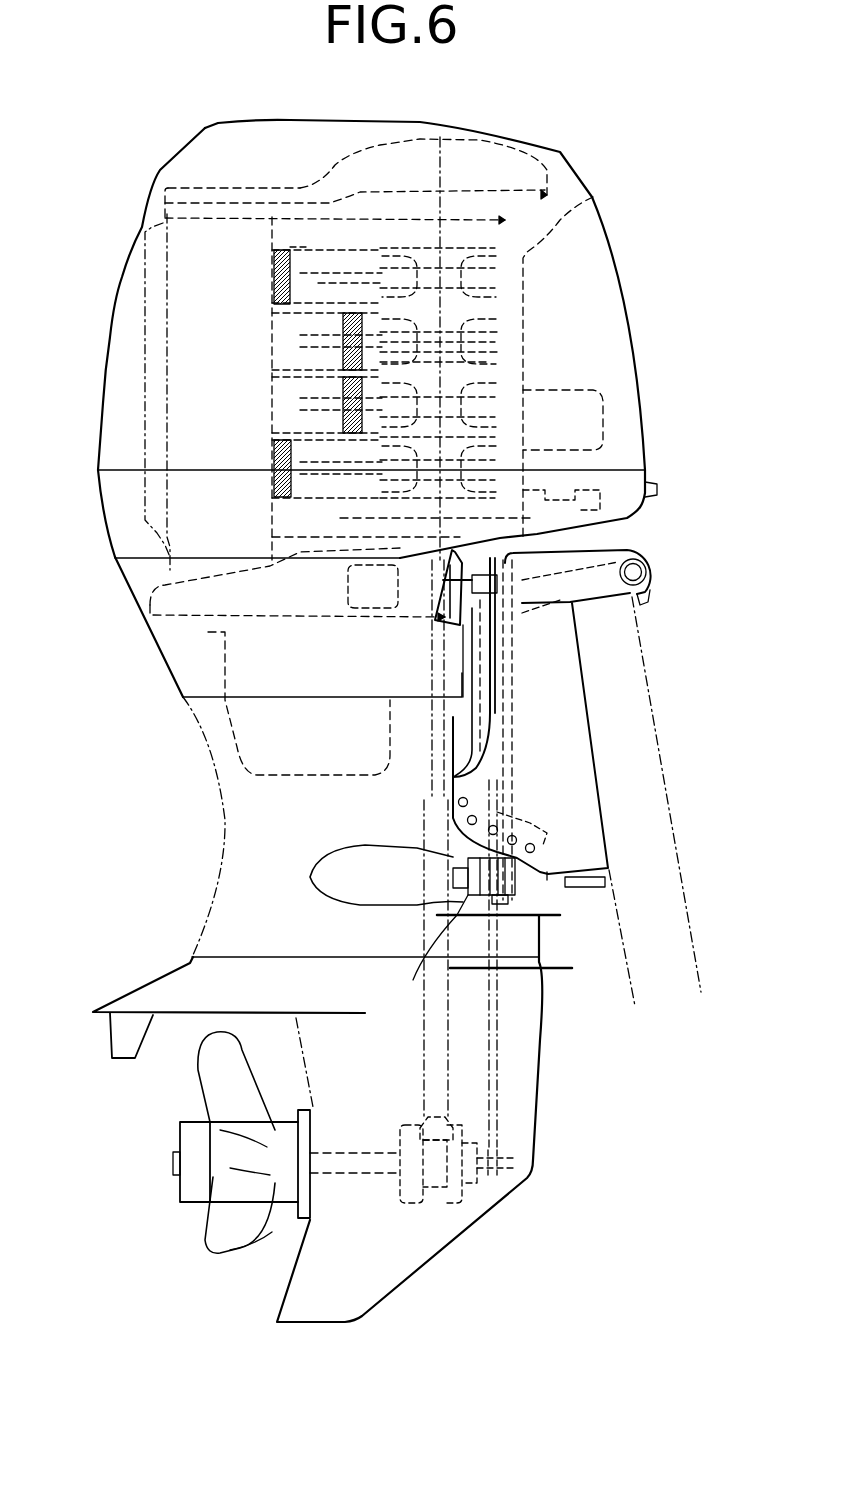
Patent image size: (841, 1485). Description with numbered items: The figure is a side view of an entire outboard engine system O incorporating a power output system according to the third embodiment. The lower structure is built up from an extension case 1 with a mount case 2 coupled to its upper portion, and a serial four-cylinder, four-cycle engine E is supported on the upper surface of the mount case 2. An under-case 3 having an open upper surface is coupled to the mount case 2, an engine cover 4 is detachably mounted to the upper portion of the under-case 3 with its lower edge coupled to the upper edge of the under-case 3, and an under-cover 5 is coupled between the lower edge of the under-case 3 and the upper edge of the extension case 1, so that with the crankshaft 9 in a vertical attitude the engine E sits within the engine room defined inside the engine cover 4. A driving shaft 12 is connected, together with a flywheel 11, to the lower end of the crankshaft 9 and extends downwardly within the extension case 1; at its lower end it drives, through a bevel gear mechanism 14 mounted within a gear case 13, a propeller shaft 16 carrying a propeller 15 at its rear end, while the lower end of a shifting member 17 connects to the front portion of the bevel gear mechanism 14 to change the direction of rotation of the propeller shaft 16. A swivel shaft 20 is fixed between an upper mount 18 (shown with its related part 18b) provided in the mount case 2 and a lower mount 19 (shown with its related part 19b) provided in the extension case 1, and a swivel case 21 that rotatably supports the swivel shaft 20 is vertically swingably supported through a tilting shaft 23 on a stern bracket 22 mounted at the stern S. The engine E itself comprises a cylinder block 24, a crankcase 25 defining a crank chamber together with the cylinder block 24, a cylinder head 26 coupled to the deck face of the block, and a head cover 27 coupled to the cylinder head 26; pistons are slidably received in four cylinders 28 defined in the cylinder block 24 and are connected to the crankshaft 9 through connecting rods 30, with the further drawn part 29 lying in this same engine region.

The extension case 1 is at (237, 833).
The mount case 2 is at (197, 622).
The under-case 3 is at (110, 533).
The engine cover 4 is at (125, 284).
The under-cover 5 is at (130, 597).
The crankshaft 9 is at (458, 443).
The flywheel 11 is at (354, 586).
The driving shaft 12 is at (428, 793).
The gear case 13 is at (538, 1108).
The bevel gear mechanism 14 is at (403, 1213).
The propeller 15 is at (227, 1237).
The propeller shaft 16 is at (347, 1152).
The shifting member 17 is at (498, 1046).
The upper mount 18 is at (375, 612).
The upper mount 18b is at (463, 625).
The lower mount 19 is at (374, 898).
The lower mount 19b is at (386, 945).
The swivel shaft 20 is at (472, 715).
The swivel case 21 is at (472, 670).
The stern bracket 22 is at (548, 877).
The tilting shaft 23 is at (641, 571).
The cylinder block 24 is at (348, 200).
The crankcase 25 is at (604, 193).
The cylinder head 26 is at (233, 213).
The head cover 27 is at (145, 383).
The cylinders 28 is at (296, 262).
The spark plug 29 is at (343, 348).
The connecting rods 30 is at (305, 265).
The engine E is at (303, 180).
The outboard engine system O is at (104, 344).
The stern S is at (665, 771).